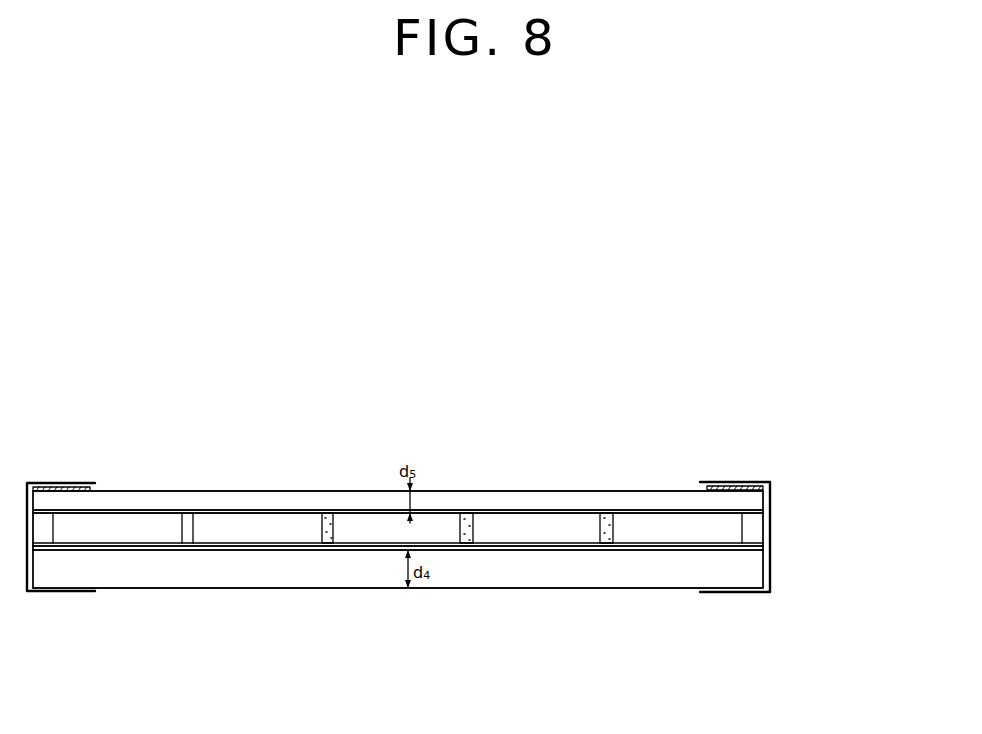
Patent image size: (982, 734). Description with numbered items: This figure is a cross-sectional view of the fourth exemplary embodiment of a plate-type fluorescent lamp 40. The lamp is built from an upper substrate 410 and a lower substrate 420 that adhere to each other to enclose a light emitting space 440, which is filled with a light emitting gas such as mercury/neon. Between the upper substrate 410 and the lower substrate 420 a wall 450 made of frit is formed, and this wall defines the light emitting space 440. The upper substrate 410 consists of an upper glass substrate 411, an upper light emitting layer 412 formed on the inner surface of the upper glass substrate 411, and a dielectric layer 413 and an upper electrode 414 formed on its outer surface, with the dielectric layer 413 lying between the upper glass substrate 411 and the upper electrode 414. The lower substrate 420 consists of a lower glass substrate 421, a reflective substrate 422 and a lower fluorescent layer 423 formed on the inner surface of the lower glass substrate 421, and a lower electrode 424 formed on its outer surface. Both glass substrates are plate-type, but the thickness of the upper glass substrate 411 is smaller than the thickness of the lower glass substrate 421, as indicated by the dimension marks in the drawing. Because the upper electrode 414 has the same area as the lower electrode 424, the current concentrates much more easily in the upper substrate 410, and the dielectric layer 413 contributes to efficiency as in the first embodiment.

The plate-type fluorescent lamp 40 is at (226, 395).
The upper substrate 410 is at (464, 499).
The upper glass substrate 411 is at (765, 510).
The upper light emitting layer 412 is at (765, 517).
The dielectric layer 413 is at (765, 488).
The upper electrode 414 is at (753, 482).
The lower substrate 420 is at (398, 590).
The lower glass substrate 421 is at (703, 575).
The reflective substrate 422 is at (653, 551).
The lower fluorescent layer 423 is at (587, 548).
The lower electrode 424 is at (585, 662).
The light emitting space 440 is at (255, 533).
The wall 450 is at (336, 545).